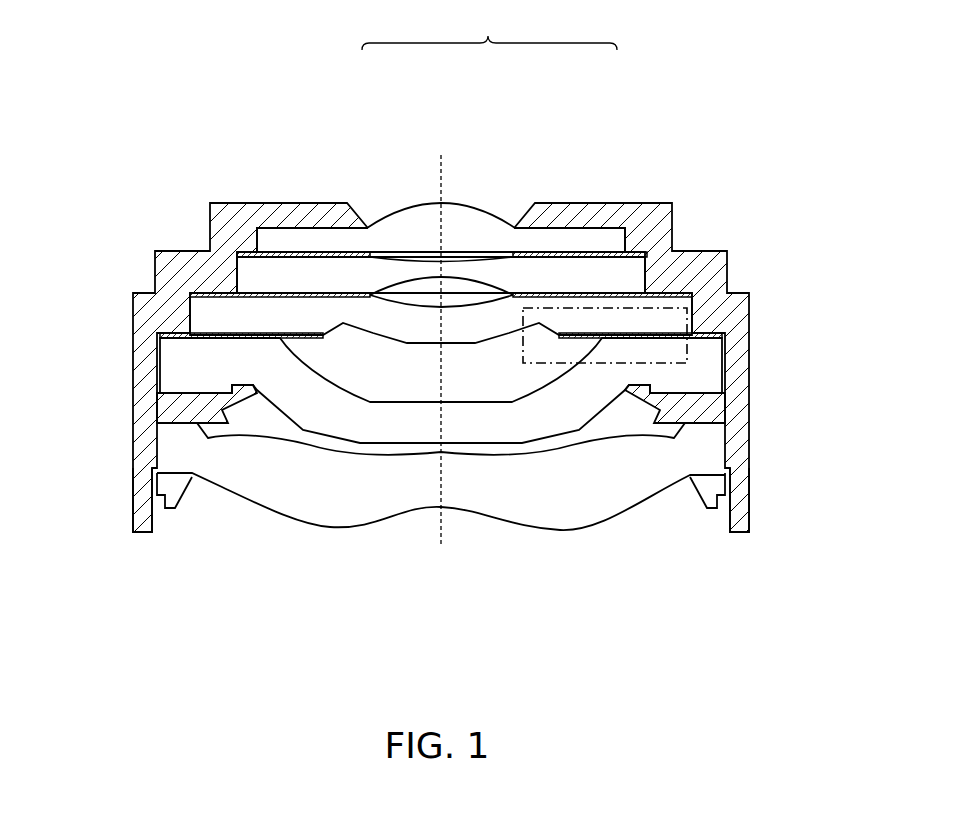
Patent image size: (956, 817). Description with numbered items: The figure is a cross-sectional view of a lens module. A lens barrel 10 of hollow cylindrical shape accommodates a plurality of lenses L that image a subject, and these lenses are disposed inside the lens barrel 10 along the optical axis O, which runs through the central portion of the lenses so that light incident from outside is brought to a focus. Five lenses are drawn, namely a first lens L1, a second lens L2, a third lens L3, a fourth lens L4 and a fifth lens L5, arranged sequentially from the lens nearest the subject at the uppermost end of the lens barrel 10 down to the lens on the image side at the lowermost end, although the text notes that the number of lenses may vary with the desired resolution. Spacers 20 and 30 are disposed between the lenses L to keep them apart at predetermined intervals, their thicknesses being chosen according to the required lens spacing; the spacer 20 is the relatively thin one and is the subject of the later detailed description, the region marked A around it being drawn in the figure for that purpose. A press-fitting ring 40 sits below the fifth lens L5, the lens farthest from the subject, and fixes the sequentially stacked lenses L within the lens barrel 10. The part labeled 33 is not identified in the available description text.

The lens barrel 10 is at (187, 267).
The spacer 20 is at (637, 333).
The spacer 30 is at (170, 410).
The lens side portion 33 is at (188, 451).
The press-fitting ring 40 is at (148, 481).
The plurality of lenses L is at (489, 32).
The first lens L1 is at (327, 237).
The second lens L2 is at (353, 270).
The third lens L3 is at (370, 317).
The fourth lens L4 is at (393, 413).
The fifth lens L5 is at (503, 473).
The detail region A is at (687, 353).
The optical axis O is at (440, 366).